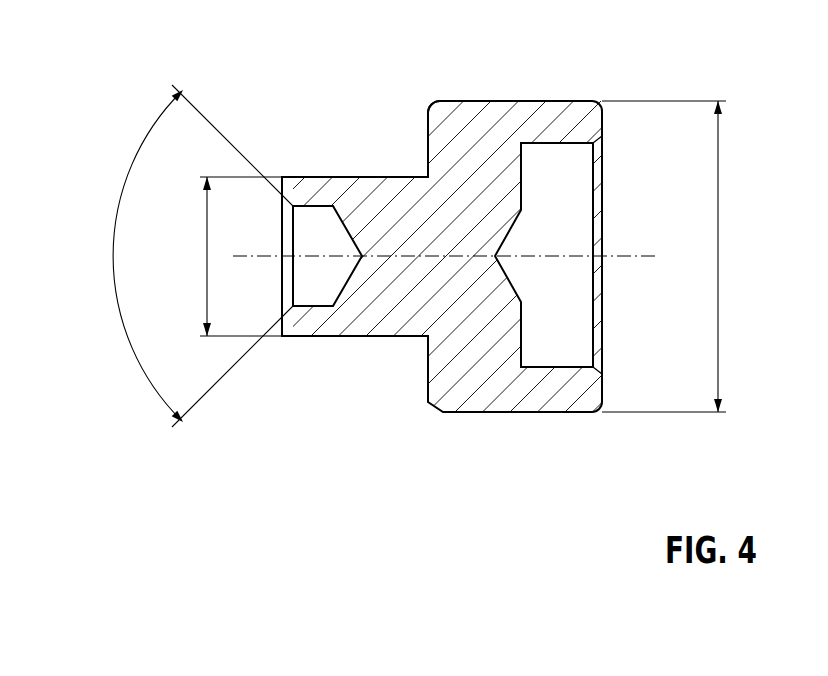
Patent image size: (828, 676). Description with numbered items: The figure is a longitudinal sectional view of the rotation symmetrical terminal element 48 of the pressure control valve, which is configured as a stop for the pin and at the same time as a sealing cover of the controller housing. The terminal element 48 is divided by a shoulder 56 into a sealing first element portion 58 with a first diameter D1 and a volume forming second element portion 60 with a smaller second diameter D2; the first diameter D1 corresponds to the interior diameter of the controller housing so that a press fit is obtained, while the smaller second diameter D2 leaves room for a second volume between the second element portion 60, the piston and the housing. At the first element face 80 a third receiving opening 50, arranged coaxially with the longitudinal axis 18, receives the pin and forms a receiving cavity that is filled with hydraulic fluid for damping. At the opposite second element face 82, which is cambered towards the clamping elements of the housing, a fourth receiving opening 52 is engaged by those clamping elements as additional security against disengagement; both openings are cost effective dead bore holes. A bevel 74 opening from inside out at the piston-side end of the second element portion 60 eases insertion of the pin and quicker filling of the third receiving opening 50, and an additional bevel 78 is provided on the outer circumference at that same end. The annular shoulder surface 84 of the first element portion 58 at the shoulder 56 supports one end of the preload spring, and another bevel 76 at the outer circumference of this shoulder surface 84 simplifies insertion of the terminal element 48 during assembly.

The longitudinal axis 18 is at (636, 256).
The terminal element 48 is at (476, 125).
The third receiving opening 50 is at (307, 275).
The fourth receiving opening 52 is at (583, 308).
The shoulder 56 is at (411, 152).
The first element portion 58 is at (536, 101).
The second element portion 60 is at (345, 177).
The bevel 74 is at (290, 206).
The bevel 76 is at (430, 106).
The additional bevel 78 is at (281, 338).
The first element face 80 is at (288, 177).
The second element face 82 is at (602, 385).
The annular shoulder surface 84 is at (427, 388).
The first diameter D1 is at (720, 264).
The second diameter D2 is at (207, 255).